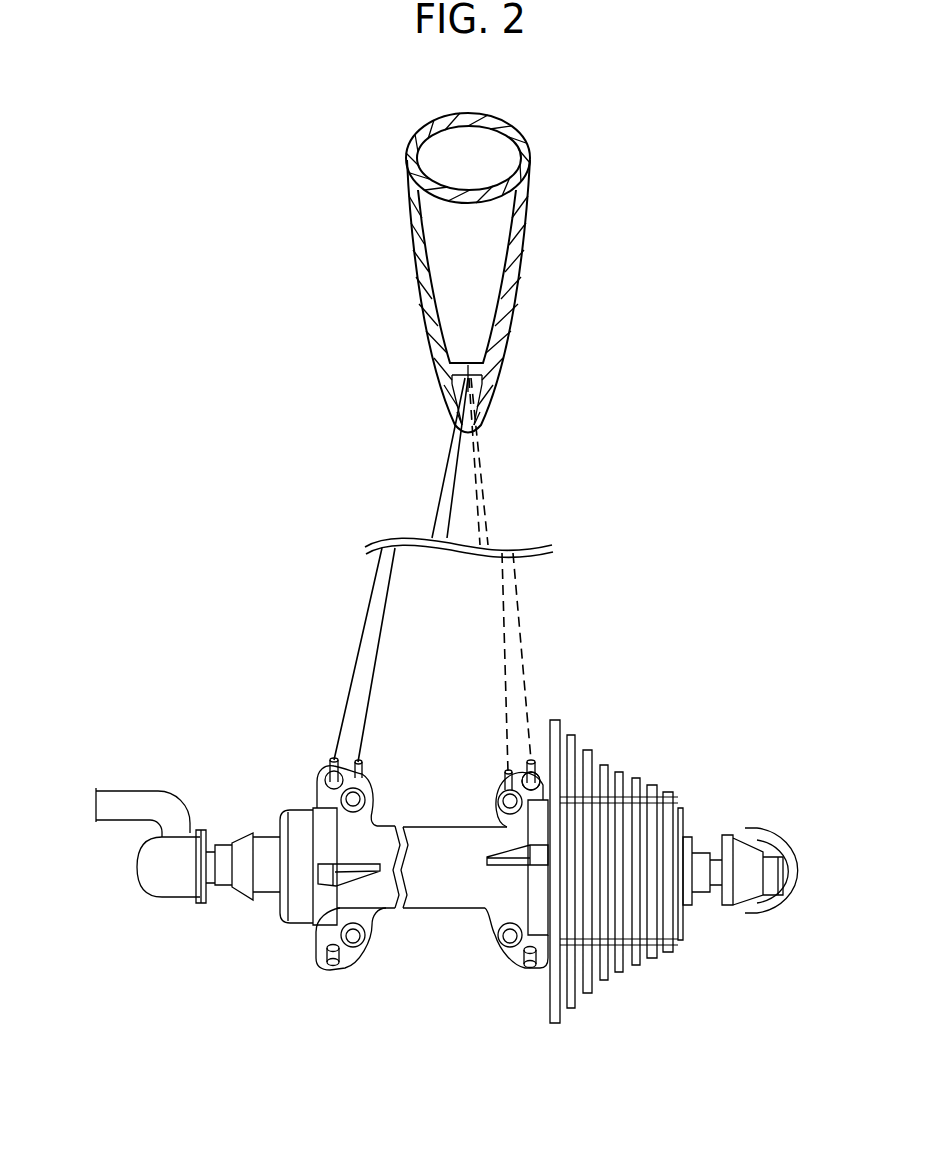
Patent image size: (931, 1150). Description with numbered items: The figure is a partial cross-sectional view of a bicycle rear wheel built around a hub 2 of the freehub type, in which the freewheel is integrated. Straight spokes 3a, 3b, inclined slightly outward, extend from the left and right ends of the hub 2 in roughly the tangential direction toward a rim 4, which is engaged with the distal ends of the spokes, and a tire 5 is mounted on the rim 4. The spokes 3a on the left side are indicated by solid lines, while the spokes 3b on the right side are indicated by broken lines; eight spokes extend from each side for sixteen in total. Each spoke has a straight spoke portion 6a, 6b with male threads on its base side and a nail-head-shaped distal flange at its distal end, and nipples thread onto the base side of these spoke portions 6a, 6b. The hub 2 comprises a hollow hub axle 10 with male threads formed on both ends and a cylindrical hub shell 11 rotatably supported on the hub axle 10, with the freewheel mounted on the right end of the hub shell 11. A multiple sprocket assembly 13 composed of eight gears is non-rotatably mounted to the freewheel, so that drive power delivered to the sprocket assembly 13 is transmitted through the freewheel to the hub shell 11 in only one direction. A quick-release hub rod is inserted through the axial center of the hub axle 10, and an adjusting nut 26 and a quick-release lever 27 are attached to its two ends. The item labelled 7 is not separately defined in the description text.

The hub 2 is at (447, 923).
The spokes 3a is at (364, 605).
The spokes 3b is at (519, 575).
The rim 4 is at (505, 310).
The tire 5 is at (525, 143).
The spoke portions 6a is at (458, 486).
The spoke portions 6b is at (482, 492).
The spoke attachment post 7 is at (537, 767).
The hub axle 10 is at (218, 842).
The hub shell 11 is at (432, 830).
The multiple sprocket assembly 13 is at (633, 767).
The adjusting nut 26 is at (745, 835).
The quick-release lever 27 is at (170, 887).